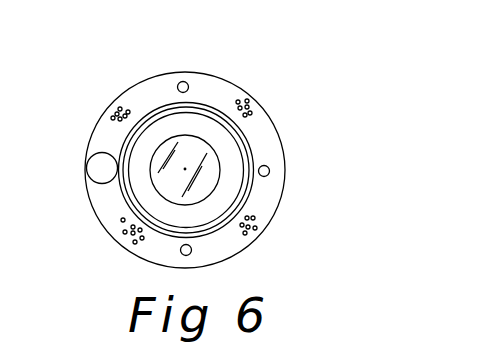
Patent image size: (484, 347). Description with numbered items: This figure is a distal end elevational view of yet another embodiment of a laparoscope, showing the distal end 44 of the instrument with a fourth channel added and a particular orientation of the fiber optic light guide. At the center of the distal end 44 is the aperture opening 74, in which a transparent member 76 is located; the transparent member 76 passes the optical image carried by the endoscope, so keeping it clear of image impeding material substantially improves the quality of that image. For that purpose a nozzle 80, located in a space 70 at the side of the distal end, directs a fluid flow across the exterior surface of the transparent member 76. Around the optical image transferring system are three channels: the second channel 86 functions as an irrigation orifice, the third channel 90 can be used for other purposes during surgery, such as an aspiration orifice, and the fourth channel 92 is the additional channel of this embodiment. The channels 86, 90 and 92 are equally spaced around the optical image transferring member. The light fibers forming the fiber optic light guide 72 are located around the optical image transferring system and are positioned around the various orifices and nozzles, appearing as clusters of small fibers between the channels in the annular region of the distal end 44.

The distal end 44 is at (279, 126).
The space 70 is at (222, 89).
The fiber optic light guide 72 is at (247, 106).
The aperture opening 74 is at (152, 121).
The transparent member 76 is at (207, 182).
The nozzle 80 is at (95, 172).
The second channel 86 is at (191, 252).
The third channel 90 is at (269, 168).
The fourth channel 92 is at (186, 82).